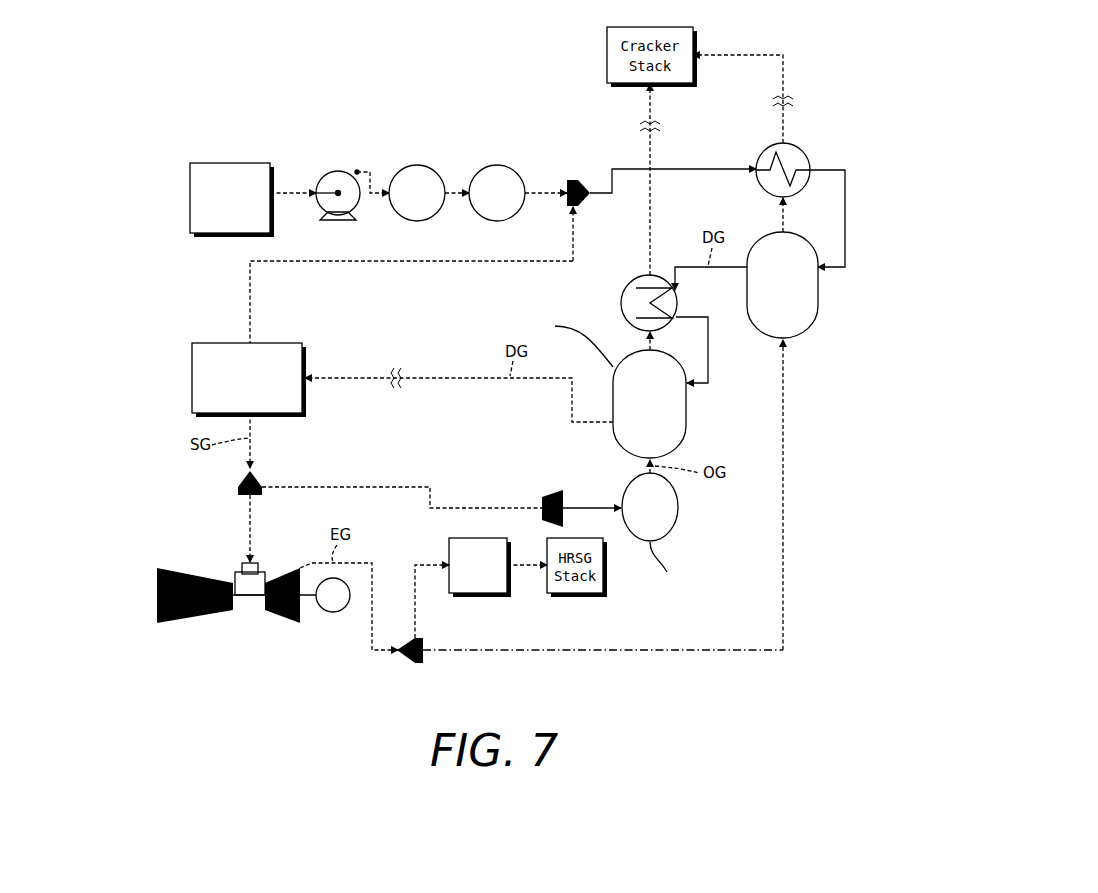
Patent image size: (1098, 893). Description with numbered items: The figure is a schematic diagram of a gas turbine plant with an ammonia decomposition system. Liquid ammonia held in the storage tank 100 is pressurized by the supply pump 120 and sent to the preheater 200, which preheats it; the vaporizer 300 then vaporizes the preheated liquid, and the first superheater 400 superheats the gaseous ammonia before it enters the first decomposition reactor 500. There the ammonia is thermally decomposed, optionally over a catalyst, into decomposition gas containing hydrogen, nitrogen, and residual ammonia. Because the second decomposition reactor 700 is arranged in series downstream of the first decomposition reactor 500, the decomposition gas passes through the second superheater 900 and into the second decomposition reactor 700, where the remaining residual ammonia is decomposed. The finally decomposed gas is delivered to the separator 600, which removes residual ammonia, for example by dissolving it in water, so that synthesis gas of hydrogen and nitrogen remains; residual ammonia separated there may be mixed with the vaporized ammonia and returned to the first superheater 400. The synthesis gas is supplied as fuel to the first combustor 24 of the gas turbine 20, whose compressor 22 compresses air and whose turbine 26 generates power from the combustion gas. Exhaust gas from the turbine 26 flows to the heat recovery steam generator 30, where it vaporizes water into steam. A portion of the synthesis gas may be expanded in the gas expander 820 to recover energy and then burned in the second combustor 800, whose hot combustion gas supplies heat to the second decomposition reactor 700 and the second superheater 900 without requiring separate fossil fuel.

The storage tank 100 is at (232, 163).
The supply pump 120 is at (338, 173).
The preheater 200 is at (417, 183).
The vaporizer 300 is at (497, 181).
The first superheater 400 is at (808, 158).
The first decomposition reactor 500 is at (820, 285).
The separator 600 is at (191, 378).
The second decomposition reactor 700 is at (686, 411).
The second combustor 800 is at (678, 507).
The gas expander 820 is at (555, 490).
The second superheater 900 is at (621, 303).
The gas turbine 20 is at (253, 624).
The compressor 22 is at (196, 623).
The first combustor 24 is at (248, 578).
The turbine 26 is at (284, 623).
The heat recovery steam generator 30 is at (479, 600).